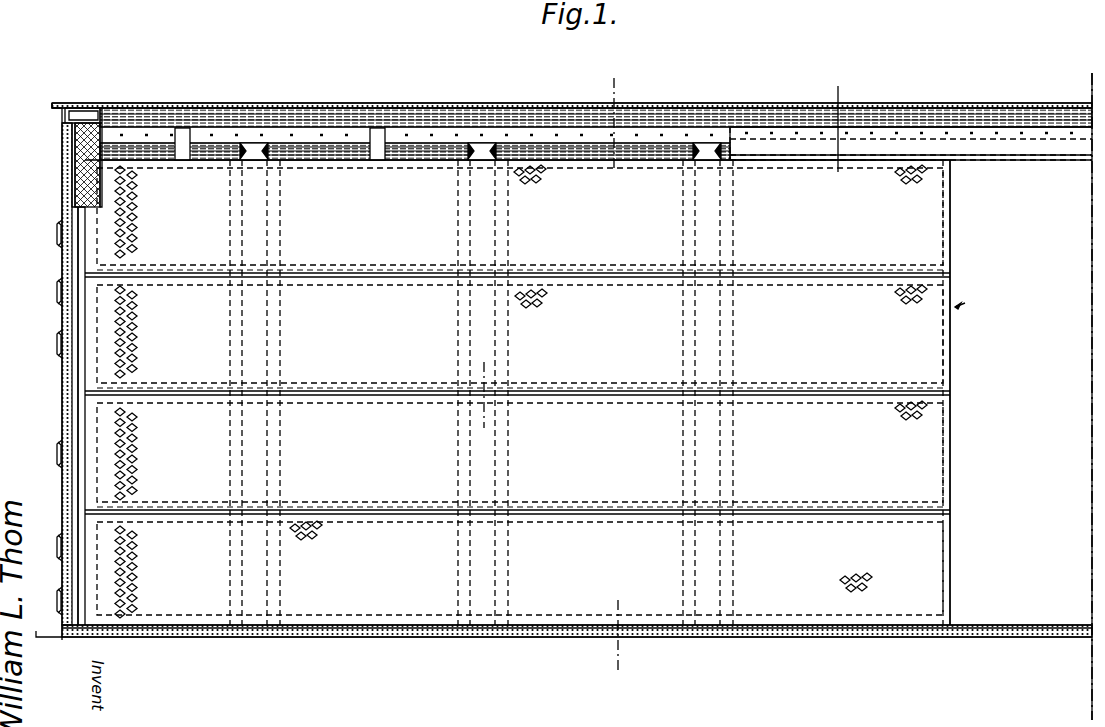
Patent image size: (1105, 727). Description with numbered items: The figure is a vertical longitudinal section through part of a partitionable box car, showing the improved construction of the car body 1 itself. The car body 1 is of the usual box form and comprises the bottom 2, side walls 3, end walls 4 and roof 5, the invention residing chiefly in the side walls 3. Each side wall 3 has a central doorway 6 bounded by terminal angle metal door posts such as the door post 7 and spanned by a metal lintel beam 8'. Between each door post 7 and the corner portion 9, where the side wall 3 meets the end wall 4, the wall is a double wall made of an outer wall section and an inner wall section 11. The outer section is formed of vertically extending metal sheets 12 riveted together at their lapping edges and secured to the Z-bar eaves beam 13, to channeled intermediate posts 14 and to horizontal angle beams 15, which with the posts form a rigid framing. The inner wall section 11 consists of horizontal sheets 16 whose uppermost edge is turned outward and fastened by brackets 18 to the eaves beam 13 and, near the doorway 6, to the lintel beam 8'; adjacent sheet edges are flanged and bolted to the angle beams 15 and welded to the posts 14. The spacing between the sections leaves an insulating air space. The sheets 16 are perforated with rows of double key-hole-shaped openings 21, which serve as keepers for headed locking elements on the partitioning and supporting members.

The car body 1 is at (72, 212).
The bottom 2 is at (450, 637).
The side wall 3 is at (982, 299).
The end wall 4 is at (62, 283).
The roof 5 is at (670, 106).
The doorway 6 is at (946, 215).
The terminal door post 7 is at (483, 395).
The lintel beam 8' is at (911, 387).
The corner portion 9 is at (86, 328).
The inner wall section 11 is at (935, 202).
The metal sheet 12 is at (642, 150).
The eaves beam 13 is at (298, 128).
The intermediate post 14 is at (245, 147).
The angle beam 15 is at (360, 268).
The sheet 16 is at (930, 233).
The bracket 18 is at (181, 128).
The opening 21 is at (137, 245).